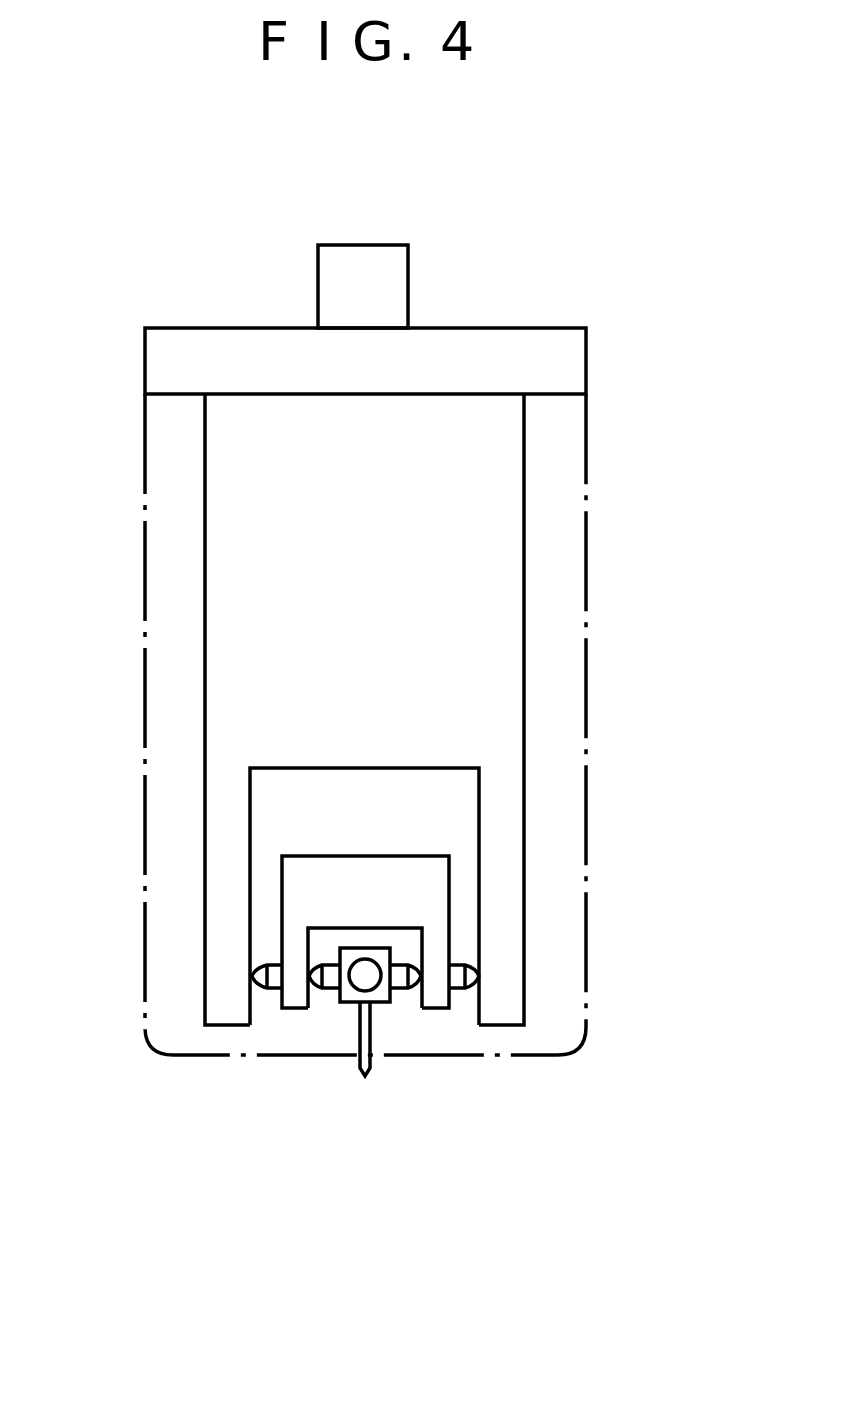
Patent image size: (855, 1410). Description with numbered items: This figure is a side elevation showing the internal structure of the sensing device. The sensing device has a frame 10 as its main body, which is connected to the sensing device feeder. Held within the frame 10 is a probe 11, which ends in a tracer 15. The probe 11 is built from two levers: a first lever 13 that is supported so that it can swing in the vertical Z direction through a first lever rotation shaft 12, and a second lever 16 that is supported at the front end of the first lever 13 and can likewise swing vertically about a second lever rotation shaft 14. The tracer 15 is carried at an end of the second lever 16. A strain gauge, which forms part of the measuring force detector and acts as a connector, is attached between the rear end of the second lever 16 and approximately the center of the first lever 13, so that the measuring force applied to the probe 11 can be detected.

The frame 10 is at (262, 530).
The probe 11 is at (218, 1203).
The first lever rotation shaft 12 is at (265, 990).
The first lever 13 is at (403, 867).
The second lever rotation shaft 14 is at (327, 990).
The tracer 15 is at (360, 1068).
The second lever 16 is at (362, 968).